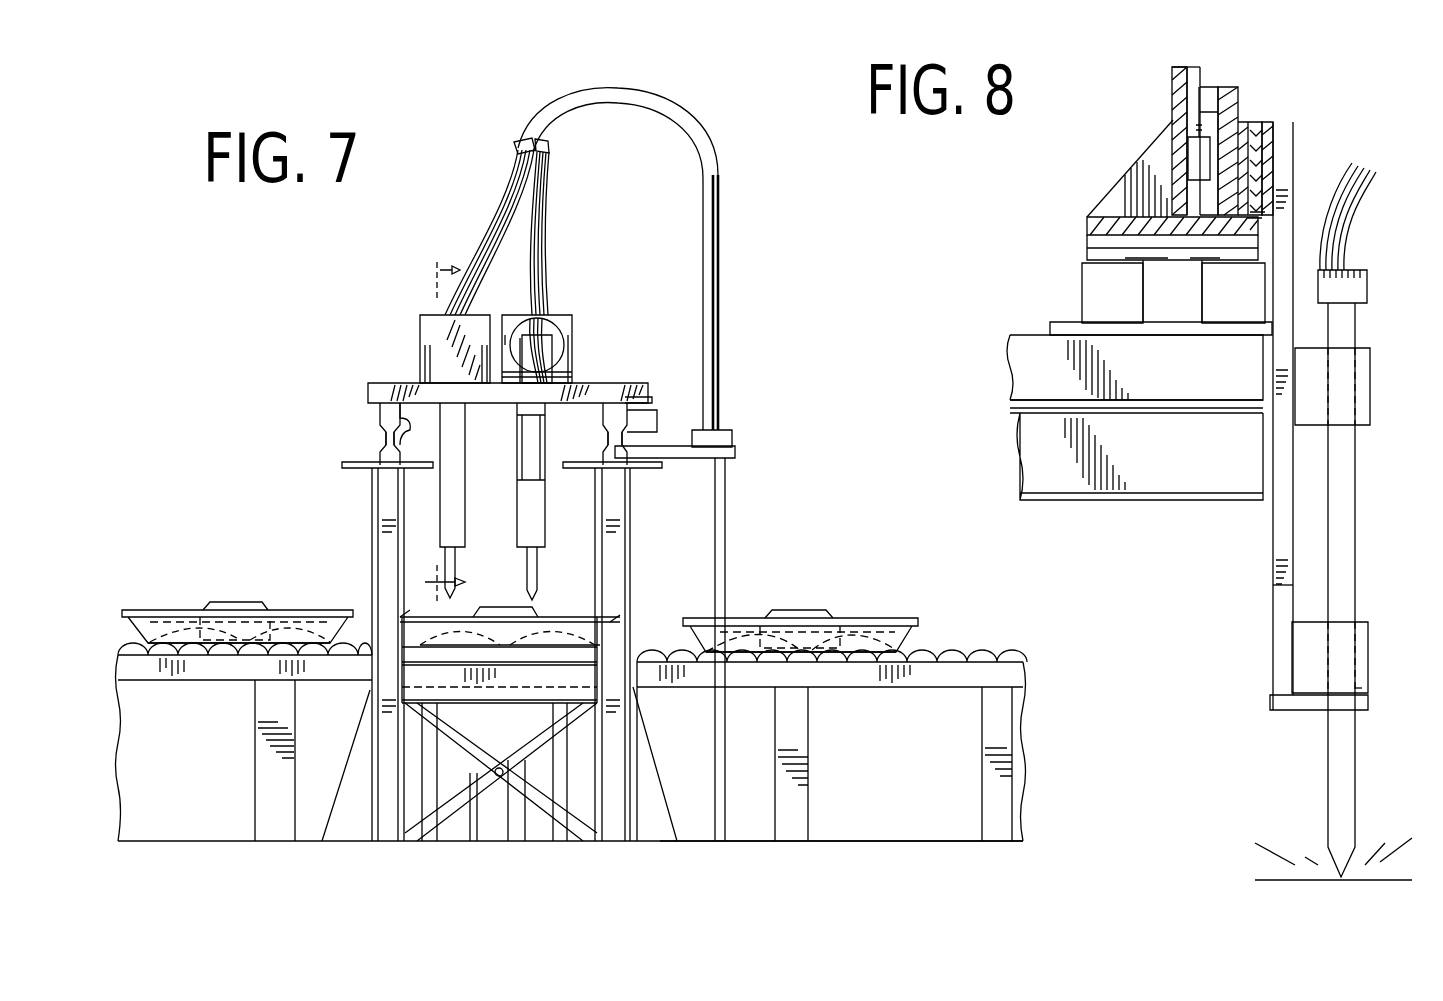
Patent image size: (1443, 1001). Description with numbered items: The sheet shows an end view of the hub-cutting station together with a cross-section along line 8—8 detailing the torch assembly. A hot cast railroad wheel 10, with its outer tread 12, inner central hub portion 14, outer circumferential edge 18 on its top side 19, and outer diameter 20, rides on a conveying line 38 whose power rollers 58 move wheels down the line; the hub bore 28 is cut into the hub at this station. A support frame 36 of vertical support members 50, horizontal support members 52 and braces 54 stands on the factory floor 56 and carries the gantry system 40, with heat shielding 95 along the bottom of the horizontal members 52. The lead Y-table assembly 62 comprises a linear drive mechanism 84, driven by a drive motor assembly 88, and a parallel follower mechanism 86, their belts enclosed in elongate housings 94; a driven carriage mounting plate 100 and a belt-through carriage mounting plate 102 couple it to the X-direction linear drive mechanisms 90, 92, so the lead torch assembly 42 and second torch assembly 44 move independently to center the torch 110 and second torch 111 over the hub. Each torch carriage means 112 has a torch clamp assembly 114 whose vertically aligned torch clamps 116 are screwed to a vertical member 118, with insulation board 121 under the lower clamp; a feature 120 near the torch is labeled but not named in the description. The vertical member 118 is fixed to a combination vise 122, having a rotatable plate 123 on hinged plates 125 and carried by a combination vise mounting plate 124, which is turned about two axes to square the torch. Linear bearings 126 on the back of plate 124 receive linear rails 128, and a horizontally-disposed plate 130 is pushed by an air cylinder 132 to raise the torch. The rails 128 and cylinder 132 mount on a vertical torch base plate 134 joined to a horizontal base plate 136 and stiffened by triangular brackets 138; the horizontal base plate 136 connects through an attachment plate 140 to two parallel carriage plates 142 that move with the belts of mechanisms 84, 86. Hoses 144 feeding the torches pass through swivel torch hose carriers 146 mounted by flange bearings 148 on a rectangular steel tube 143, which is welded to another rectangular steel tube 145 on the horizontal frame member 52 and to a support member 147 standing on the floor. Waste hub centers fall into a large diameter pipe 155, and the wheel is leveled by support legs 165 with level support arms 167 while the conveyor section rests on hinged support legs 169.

In FIG. 7, the section line 8 is at (437, 427).
In FIG. 7, the railroad wheel 10 is at (308, 610).
In FIG. 7, the outer tread 12 is at (922, 645).
In FIG. 7, the inner central hub portion 14 is at (208, 600).
In FIG. 7, the outer circumferential edge 18 is at (292, 610).
In FIG. 7, the top side 19 is at (215, 610).
In FIG. 7, the outer diameter 20 is at (135, 612).
In FIG. 7, the hub bore 28 is at (262, 610).
In FIG. 7, the support frame 36 is at (375, 528).
In FIG. 7, the conveying line 38 is at (868, 690).
In FIG. 7, the gantry system 40 is at (358, 384).
In FIG. 8, the gantry system 40 is at (1035, 386).
In FIG. 7, the lead torch assembly 42 is at (410, 322).
In FIG. 8, the lead torch assembly 42 is at (1128, 150).
In FIG. 7, the second torch assembly 44 is at (560, 332).
In FIG. 7, the vertical support members 50 is at (385, 838).
In FIG. 7, the horizontal support members 52 is at (384, 438).
In FIG. 8, the horizontal support members 52 is at (1050, 462).
In FIG. 7, the braces 54 is at (510, 690).
In FIG. 7, the factory floor 56 is at (912, 841).
In FIG. 7, the power rollers 58 is at (1002, 657).
In FIG. 7, the lead Y-table assembly 62 is at (575, 398).
In FIG. 7, the linear drive mechanism 84 is at (470, 405).
In FIG. 8, the linear drive mechanism 84 is at (1105, 287).
In FIG. 8, the linear follower mechanism 86 is at (1233, 300).
In FIG. 7, the drive motor assembly 88 is at (648, 425).
In FIG. 7, the X-direction linear drive mechanism 90 is at (380, 418).
In FIG. 7, the X-direction linear drive mechanism 92 is at (603, 428).
In FIG. 8, the X-direction linear drive mechanism 92 is at (1155, 385).
In FIG. 8, the elongate housing 94 is at (1030, 360).
In FIG. 7, the heat shielding 95 is at (360, 465).
In FIG. 7, the driven carriage mounting plate 100 is at (648, 392).
In FIG. 8, the driven carriage mounting plate 100 is at (1065, 330).
In FIG. 7, the belt-through carriage mounting plate 102 is at (396, 432).
In FIG. 7, the torch 110 is at (455, 570).
In FIG. 8, the torch 110 is at (1356, 540).
In FIG. 7, the second torch 111 is at (540, 575).
In FIG. 7, the torch carriage means 112 is at (425, 355).
In FIG. 8, the torch carriage means 112 is at (1258, 588).
In FIG. 8, the torch clamp assembly 114 is at (1372, 688).
In FIG. 8, the torch clamps 116 is at (1365, 392).
In FIG. 8, the vertical member 118 is at (1283, 668).
In FIG. 8, the needle tip 120 is at (1340, 782).
In FIG. 8, the high-temperature insulation board 121 is at (1283, 712).
In FIG. 7, the combination vise 122 is at (555, 355).
In FIG. 8, the combination vise 122 is at (1255, 115).
In FIG. 7, the rotatable plate 123 is at (528, 318).
In FIG. 8, the rotatable plate 123 is at (1270, 135).
In FIG. 8, the combination vise mounting plate 124 is at (1240, 92).
In FIG. 7, the hinged plates 125 is at (515, 320).
In FIG. 8, the hinged plates 125 is at (1258, 210).
In FIG. 8, the linear bearings 126 is at (1215, 92).
In FIG. 8, the linear rail 128 is at (1203, 75).
In FIG. 8, the horizontally-disposed plate 130 is at (1172, 90).
In FIG. 8, the air cylinder 132 is at (1188, 150).
In FIG. 8, the vertical torch base plate 134 is at (1178, 67).
In FIG. 8, the horizontal base plate 136 is at (1087, 225).
In FIG. 8, the triangular brackets 138 is at (1118, 195).
In FIG. 8, the attachment plate 140 is at (1090, 250).
In FIG. 8, the carriage plates 142 is at (1200, 262).
In FIG. 7, the rectangular steel tube 143 is at (726, 478).
In FIG. 7, the hoses 144 is at (500, 200).
In FIG. 8, the hoses 144 is at (1372, 235).
In FIG. 7, the rectangular steel tube 145 is at (684, 458).
In FIG. 7, the swivel torch hose carrier 146 is at (720, 242).
In FIG. 7, the support member 147 is at (727, 582).
In FIG. 7, the flange bearings 148 is at (733, 440).
In FIG. 7, the large diameter pipe 155 is at (495, 828).
In FIG. 7, the support legs 165 is at (425, 760).
In FIG. 7, the level support arms 167 is at (395, 692).
In FIG. 7, the hinged support legs 169 is at (600, 725).